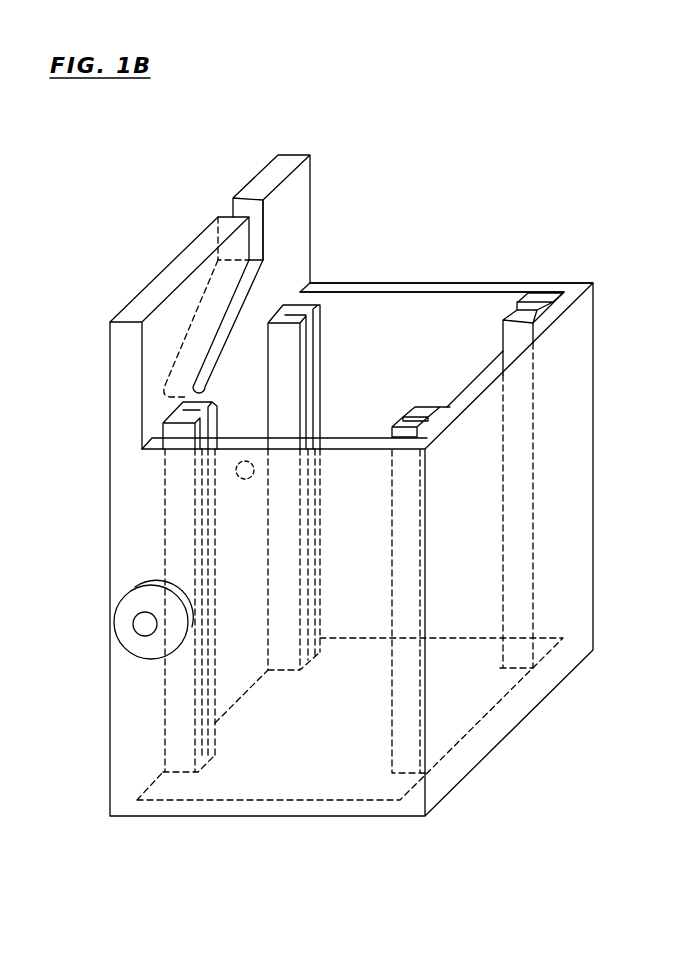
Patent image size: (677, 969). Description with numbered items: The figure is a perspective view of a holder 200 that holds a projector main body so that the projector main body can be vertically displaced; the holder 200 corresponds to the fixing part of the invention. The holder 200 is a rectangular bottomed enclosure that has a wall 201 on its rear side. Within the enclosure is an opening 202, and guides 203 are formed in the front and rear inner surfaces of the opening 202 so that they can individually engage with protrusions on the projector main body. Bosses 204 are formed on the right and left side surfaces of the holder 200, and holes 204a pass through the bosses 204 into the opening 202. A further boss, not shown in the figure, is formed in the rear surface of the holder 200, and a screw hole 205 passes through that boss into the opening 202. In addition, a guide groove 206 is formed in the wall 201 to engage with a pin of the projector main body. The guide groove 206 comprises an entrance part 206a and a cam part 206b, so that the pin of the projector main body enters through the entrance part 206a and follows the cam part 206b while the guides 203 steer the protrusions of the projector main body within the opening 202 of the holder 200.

The holder 200 is at (503, 753).
The wall 201 is at (155, 291).
The opening 202 is at (395, 308).
The guides 203 is at (170, 418).
The bosses 204 is at (143, 602).
The holes 204a is at (143, 630).
The screw hole 205 is at (252, 477).
The guide groove 206 is at (225, 208).
The entrance part 206a is at (257, 232).
The cam part 206b is at (237, 300).